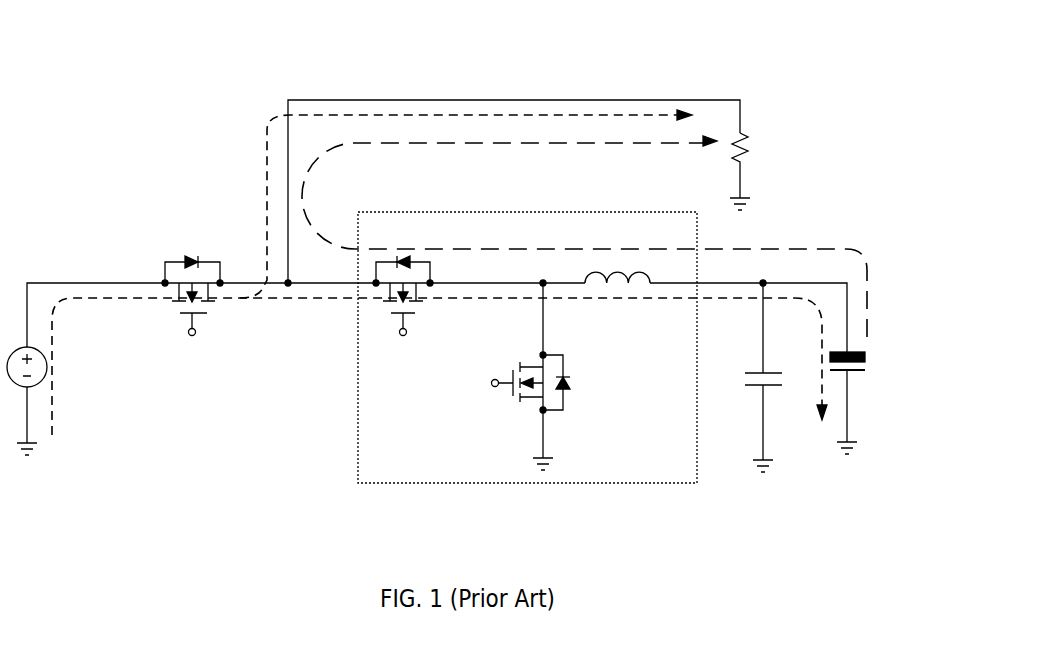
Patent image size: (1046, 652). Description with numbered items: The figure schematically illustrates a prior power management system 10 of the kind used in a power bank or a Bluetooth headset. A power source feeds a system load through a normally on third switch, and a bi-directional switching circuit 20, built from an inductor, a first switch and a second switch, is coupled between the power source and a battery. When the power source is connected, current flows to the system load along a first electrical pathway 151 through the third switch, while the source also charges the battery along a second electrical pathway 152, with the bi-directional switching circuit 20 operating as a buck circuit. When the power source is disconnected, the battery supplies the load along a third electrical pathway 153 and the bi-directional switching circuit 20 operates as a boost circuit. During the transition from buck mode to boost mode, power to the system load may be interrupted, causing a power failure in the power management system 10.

The power management system 10 is at (216, 66).
The bi-directional switching circuit 20 is at (424, 460).
The first electrical pathway 151 is at (266, 180).
The second electrical pathway 152 is at (640, 302).
The third electrical pathway 153 is at (457, 146).